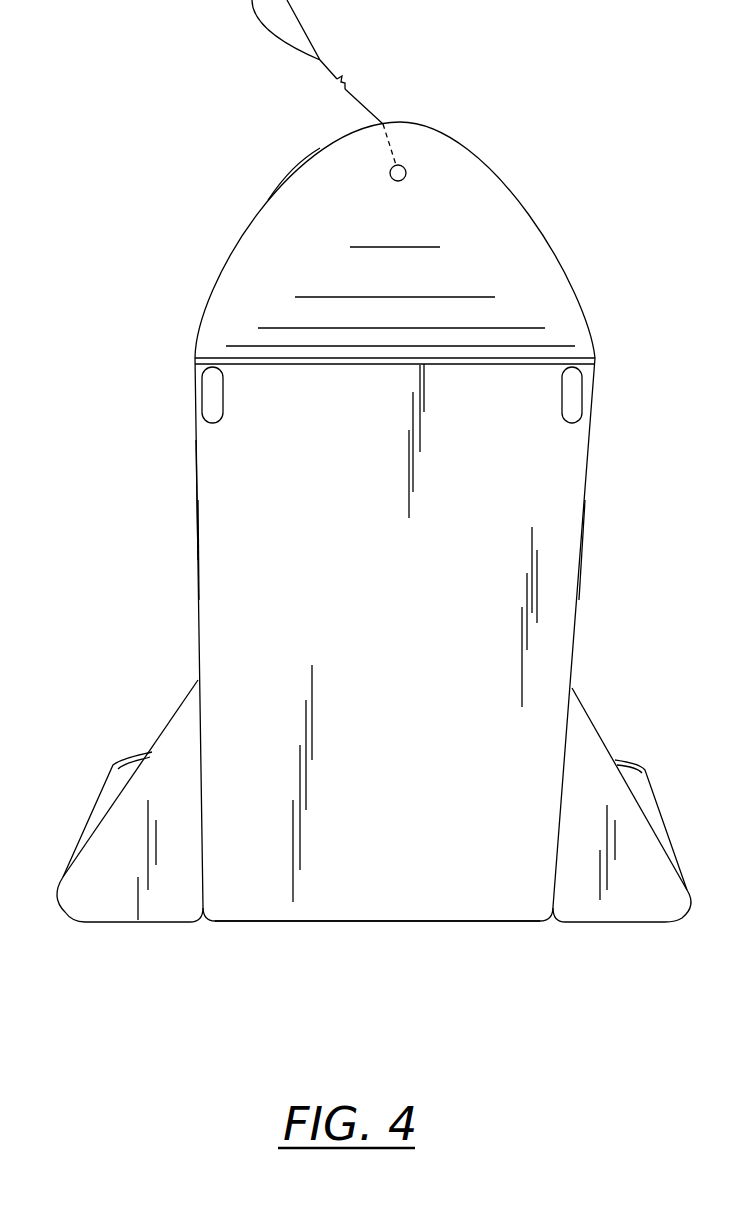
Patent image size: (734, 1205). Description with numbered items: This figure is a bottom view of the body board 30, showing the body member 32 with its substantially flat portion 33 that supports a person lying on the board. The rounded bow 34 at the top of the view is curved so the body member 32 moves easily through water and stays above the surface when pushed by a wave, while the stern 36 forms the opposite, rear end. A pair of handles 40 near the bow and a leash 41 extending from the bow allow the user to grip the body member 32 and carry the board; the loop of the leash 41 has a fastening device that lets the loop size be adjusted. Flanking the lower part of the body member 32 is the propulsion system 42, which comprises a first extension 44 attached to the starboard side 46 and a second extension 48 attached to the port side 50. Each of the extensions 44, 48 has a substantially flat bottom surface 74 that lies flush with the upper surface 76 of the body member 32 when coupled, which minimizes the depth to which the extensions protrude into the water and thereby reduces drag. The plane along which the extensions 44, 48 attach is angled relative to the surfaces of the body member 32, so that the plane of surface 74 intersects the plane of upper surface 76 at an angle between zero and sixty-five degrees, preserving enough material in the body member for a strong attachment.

The body board 30 is at (365, 482).
The body member 32 is at (365, 607).
The substantially flat portion 33 is at (200, 496).
The bow 34 is at (467, 162).
The stern 36 is at (416, 913).
The handles 40 is at (205, 392).
The leash 41 is at (267, 32).
The propulsion system 42 is at (365, 797).
The first extension 44 is at (97, 855).
The starboard side 46 is at (200, 548).
The second extension 48 is at (637, 833).
The port side 50 is at (578, 552).
The substantially flat bottom surface 74 is at (176, 738).
The upper surface 76 is at (291, 173).